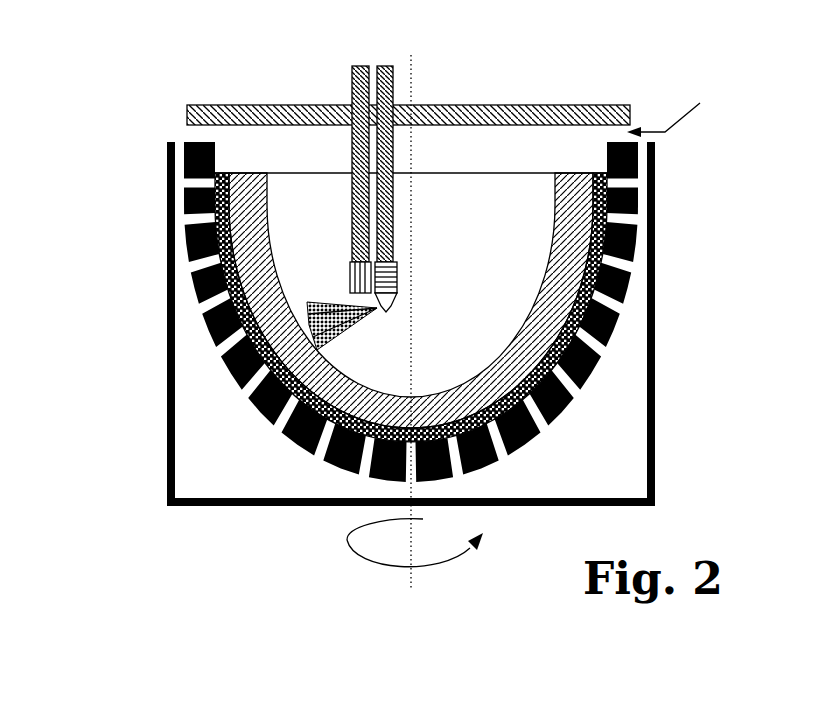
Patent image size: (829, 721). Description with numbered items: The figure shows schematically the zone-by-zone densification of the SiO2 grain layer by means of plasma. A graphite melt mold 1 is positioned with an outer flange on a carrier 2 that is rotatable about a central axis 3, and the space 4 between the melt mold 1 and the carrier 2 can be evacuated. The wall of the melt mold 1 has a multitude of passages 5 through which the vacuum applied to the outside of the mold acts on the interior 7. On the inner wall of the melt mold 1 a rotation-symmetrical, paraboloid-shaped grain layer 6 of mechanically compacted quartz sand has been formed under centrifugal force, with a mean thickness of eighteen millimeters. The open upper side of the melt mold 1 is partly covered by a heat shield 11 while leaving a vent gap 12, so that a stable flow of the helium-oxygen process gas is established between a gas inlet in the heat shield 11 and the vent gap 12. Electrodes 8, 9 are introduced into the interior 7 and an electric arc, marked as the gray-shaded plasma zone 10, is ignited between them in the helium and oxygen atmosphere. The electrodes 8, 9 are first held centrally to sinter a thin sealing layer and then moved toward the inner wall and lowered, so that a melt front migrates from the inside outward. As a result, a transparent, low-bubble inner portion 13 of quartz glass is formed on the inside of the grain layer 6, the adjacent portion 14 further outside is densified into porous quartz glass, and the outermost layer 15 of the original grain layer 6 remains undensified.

The melt mold 1 is at (635, 205).
The carrier 2 is at (655, 472).
The central axis 3 is at (413, 90).
The space 4 is at (572, 465).
The passages 5 is at (205, 218).
The grain layer 6 is at (262, 400).
The interior 7 is at (465, 234).
The electrode 8 is at (353, 72).
The electrode 9 is at (353, 93).
The plasma zone 10 is at (329, 434).
The heat shield 11 is at (582, 108).
The vent gap 12 is at (678, 107).
The transparent inner portion 13 is at (623, 273).
The adjacent portion 14 is at (607, 320).
The outermost layer 15 is at (593, 347).